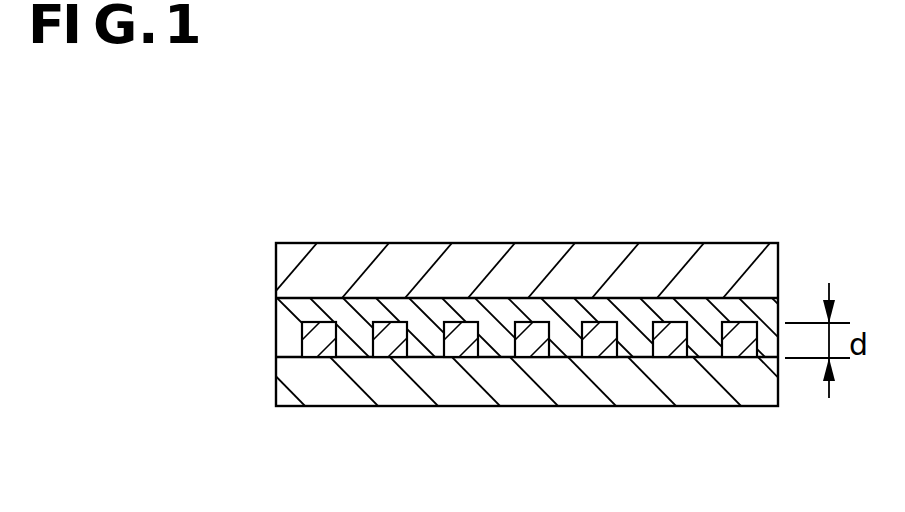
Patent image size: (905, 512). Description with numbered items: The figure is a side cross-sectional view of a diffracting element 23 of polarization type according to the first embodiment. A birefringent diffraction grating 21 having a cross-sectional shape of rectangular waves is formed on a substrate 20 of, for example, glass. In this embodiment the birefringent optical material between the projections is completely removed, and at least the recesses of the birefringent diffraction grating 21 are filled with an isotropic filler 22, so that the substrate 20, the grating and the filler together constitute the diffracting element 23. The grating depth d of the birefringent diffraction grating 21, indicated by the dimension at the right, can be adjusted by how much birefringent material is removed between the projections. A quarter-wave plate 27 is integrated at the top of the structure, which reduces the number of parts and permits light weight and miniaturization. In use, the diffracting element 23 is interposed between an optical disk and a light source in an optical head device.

The substrate 20 is at (473, 380).
The birefringent diffraction grating 21 is at (628, 310).
The isotropic filler 22 is at (499, 327).
The diffracting element 23 is at (568, 204).
The quarter-wave plate 27 is at (292, 273).